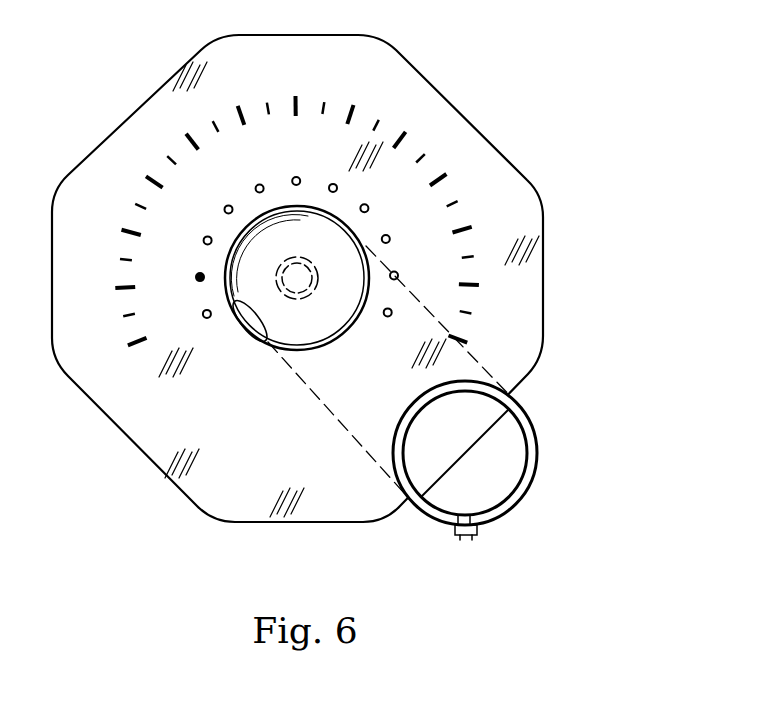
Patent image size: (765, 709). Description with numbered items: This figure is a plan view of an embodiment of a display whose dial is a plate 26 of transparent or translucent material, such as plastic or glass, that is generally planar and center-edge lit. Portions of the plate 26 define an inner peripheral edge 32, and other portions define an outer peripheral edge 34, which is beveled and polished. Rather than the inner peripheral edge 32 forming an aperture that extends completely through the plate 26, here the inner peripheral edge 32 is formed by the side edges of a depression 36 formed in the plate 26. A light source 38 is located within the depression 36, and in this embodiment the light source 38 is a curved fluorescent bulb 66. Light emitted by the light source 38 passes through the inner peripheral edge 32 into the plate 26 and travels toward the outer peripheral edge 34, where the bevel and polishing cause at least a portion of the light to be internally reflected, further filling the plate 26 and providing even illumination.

The plate 26 is at (480, 132).
The inner peripheral edge 32 is at (260, 340).
The outer peripheral edge 34 is at (427, 53).
The depression 36 is at (348, 292).
The light source 38 is at (563, 441).
The curved fluorescent bulb 66 is at (433, 515).